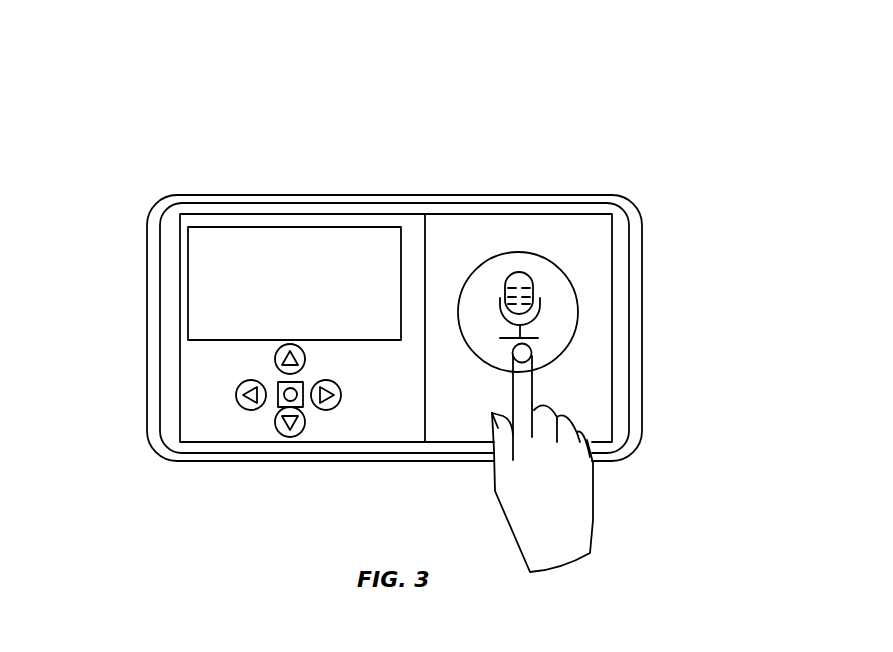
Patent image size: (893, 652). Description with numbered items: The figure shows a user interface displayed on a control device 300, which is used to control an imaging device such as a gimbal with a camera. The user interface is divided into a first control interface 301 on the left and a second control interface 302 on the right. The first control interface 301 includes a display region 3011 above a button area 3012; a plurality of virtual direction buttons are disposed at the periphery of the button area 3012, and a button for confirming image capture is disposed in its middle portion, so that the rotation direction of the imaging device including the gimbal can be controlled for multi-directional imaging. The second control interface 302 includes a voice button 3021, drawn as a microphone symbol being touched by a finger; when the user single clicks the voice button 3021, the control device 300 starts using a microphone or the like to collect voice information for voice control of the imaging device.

The control device 300 is at (200, 103).
The first control interface 301 is at (180, 268).
The display screen 3011 is at (265, 240).
The button area 3012 is at (240, 387).
The second control interface 302 is at (612, 252).
The voice button 3021 is at (578, 317).